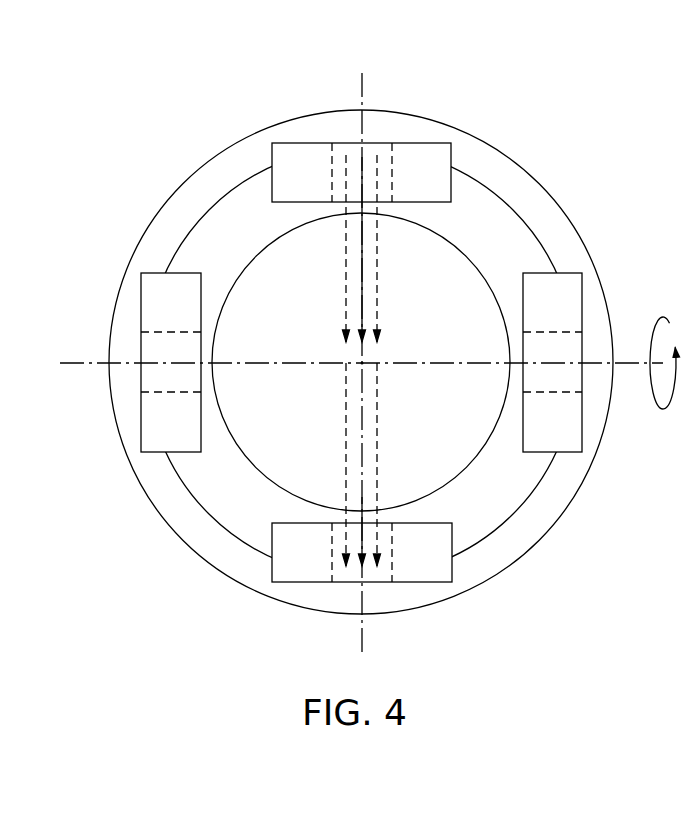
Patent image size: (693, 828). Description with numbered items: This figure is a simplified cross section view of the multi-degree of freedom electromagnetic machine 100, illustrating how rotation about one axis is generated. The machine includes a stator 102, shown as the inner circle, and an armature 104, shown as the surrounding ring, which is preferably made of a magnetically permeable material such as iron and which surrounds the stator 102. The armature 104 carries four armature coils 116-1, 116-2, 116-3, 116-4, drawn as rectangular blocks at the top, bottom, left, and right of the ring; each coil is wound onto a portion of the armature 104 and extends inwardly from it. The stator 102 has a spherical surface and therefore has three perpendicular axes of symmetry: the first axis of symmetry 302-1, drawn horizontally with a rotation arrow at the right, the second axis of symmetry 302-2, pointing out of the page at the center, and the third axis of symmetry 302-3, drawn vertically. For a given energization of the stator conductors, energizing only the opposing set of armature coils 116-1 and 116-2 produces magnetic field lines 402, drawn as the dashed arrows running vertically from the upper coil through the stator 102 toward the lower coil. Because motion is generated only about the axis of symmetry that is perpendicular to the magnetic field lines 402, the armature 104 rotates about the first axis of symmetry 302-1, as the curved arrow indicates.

The multi-degree of freedom electromagnetic machine 100 is at (352, 324).
The stator 102 is at (455, 247).
The armature 104 is at (530, 175).
The armature coil 116-1 is at (425, 143).
The armature coil 116-2 is at (417, 583).
The armature coil 116-3 is at (141, 300).
The armature coil 116-4 is at (582, 298).
The first axis of symmetry 302-1 is at (637, 363).
The second axis of symmetry 302-2 is at (362, 363).
The third axis of symmetry 302-3 is at (362, 84).
The magnetic field lines 402 is at (311, 360).